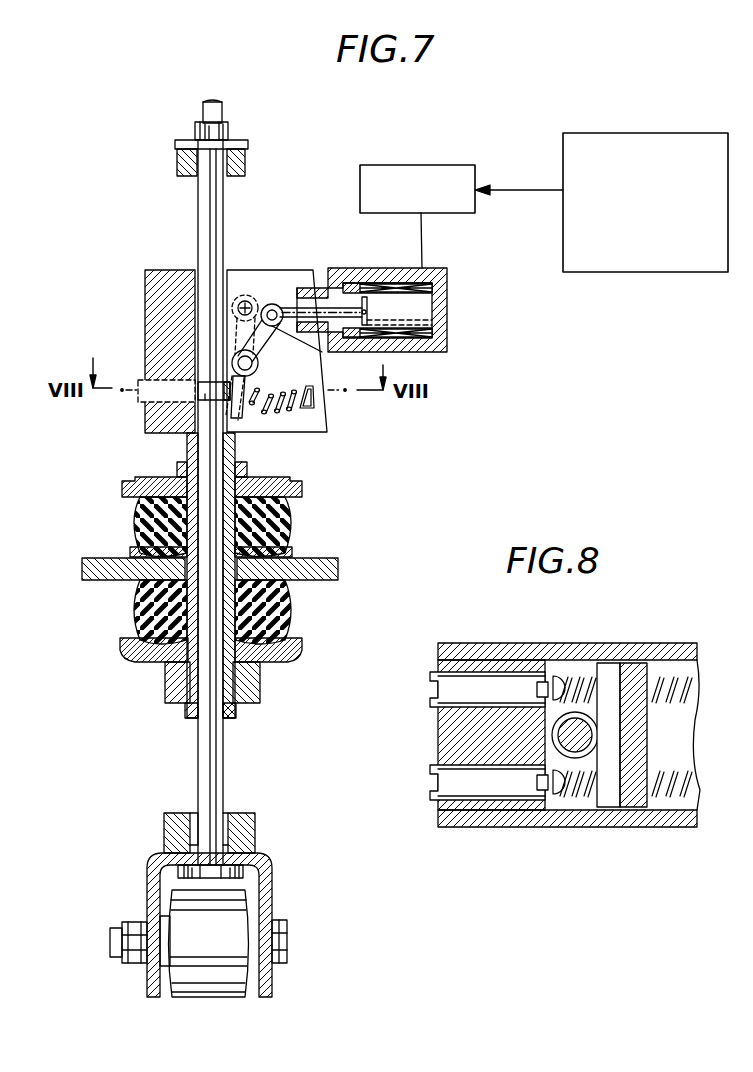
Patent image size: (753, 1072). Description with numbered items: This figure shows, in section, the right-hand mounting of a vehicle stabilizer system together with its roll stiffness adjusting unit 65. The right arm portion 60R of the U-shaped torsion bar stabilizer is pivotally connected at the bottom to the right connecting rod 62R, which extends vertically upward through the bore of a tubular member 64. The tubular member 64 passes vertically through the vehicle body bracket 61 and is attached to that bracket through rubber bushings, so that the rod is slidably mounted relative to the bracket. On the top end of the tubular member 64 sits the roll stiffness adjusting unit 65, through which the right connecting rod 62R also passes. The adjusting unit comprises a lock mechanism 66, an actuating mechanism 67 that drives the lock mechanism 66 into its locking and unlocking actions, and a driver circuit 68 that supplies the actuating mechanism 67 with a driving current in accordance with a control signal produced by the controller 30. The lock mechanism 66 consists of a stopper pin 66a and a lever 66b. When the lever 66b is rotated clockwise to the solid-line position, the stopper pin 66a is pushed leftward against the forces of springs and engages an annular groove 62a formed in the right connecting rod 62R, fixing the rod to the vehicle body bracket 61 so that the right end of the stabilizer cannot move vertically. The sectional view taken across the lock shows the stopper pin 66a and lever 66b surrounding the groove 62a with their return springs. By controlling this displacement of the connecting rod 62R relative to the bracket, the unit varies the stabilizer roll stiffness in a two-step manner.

In FIG. 7, the controller 30 is at (644, 133).
In FIG. 7, the driver circuit 68 is at (422, 165).
In FIG. 7, the roll stiffness adjusting unit 65 is at (385, 296).
In FIG. 7, the actuating mechanism 67 is at (444, 350).
In FIG. 7, the lock mechanism 66 is at (330, 425).
In FIG. 8, the lock mechanism 66 is at (622, 733).
In FIG. 7, the stopper pin 66a is at (230, 391).
In FIG. 8, the stopper pin 66a is at (608, 800).
In FIG. 7, the lever 66b is at (300, 356).
In FIG. 8, the lever 66b is at (637, 800).
In FIG. 7, the tubular member 64 is at (186, 442).
In FIG. 7, the annular groove 62a is at (236, 436).
In FIG. 8, the annular groove 62a is at (553, 735).
In FIG. 7, the vehicle body bracket 61 is at (101, 558).
In FIG. 7, the right connecting rod 62R is at (216, 767).
In FIG. 7, the right arm portion 60R is at (212, 988).